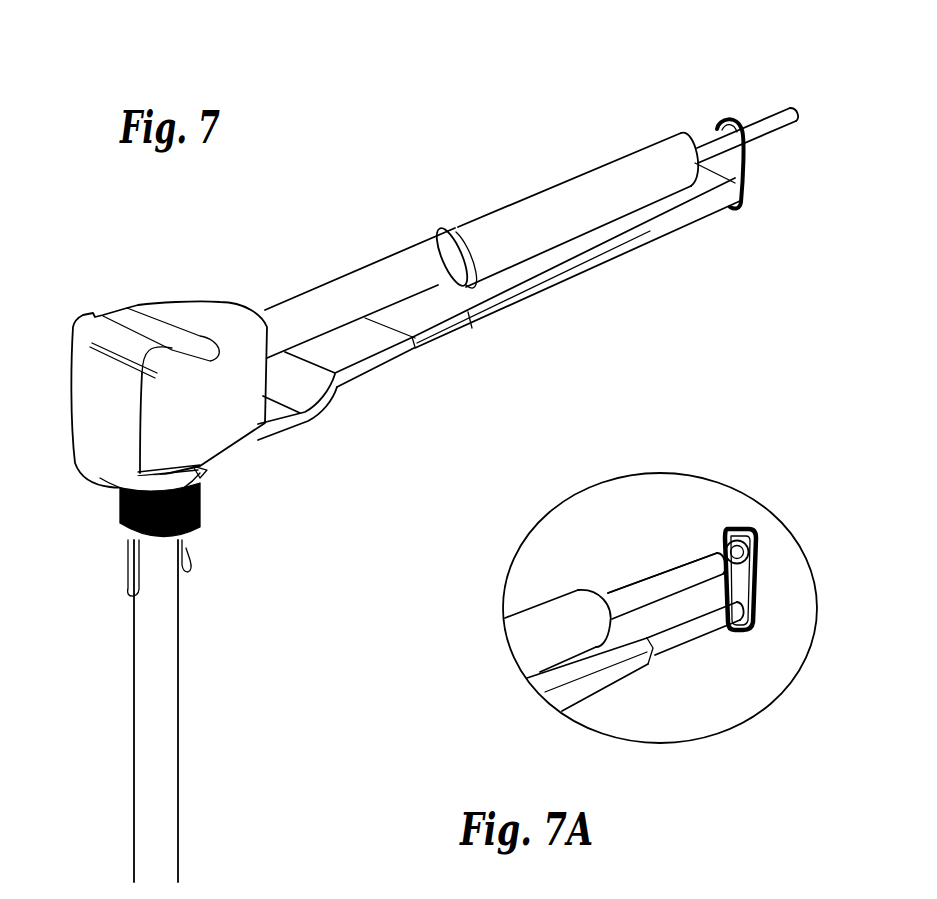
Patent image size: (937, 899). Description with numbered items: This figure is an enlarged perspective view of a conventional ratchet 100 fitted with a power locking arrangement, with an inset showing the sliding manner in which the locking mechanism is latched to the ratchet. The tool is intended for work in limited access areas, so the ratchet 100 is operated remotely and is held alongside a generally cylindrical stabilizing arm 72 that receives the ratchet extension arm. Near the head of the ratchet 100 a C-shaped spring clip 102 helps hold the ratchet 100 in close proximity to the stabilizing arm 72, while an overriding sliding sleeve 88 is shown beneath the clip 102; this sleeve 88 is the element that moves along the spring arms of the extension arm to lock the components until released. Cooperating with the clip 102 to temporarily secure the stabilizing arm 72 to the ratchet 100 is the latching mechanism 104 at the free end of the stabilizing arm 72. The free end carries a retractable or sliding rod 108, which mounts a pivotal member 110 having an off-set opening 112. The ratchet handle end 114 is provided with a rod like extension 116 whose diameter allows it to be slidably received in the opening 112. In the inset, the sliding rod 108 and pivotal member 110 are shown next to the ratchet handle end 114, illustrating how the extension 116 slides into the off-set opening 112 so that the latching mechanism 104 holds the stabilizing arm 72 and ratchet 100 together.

In FIG. 7, the stabilizing arm 72 is at (512, 316).
In FIG. 7A, the stabilizing arm 72 is at (590, 674).
In FIG. 7, the overriding sliding sleeve 88 is at (200, 508).
In FIG. 7, the ratchet 100 is at (331, 276).
In FIG. 7, the C-shaped spring clip 102 is at (90, 433).
In FIG. 7, the latching mechanism 104 is at (747, 182).
In FIG. 7A, the latching mechanism 104 is at (632, 580).
In FIG. 7A, the sliding rod 108 is at (678, 648).
In FIG. 7A, the pivotal member 110 is at (758, 603).
In FIG. 7A, the off-set opening 112 is at (765, 560).
In FIG. 7, the ratchet handle end 114 is at (595, 166).
In FIG. 7A, the ratchet handle end 114 is at (550, 598).
In FIG. 7, the rod like extension 116 is at (771, 116).
In FIG. 7A, the rod like extension 116 is at (667, 563).